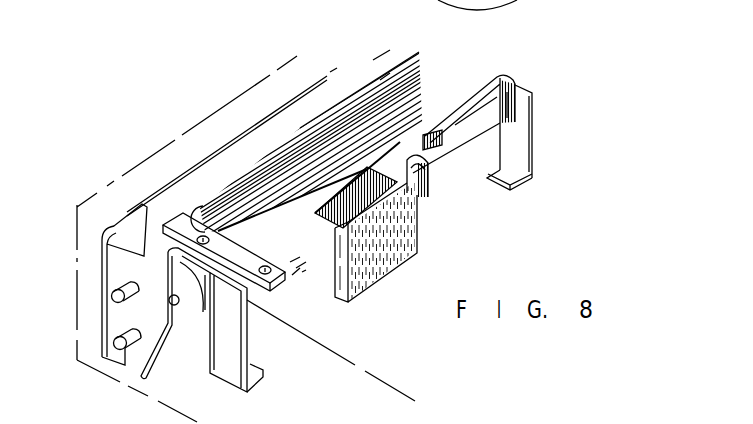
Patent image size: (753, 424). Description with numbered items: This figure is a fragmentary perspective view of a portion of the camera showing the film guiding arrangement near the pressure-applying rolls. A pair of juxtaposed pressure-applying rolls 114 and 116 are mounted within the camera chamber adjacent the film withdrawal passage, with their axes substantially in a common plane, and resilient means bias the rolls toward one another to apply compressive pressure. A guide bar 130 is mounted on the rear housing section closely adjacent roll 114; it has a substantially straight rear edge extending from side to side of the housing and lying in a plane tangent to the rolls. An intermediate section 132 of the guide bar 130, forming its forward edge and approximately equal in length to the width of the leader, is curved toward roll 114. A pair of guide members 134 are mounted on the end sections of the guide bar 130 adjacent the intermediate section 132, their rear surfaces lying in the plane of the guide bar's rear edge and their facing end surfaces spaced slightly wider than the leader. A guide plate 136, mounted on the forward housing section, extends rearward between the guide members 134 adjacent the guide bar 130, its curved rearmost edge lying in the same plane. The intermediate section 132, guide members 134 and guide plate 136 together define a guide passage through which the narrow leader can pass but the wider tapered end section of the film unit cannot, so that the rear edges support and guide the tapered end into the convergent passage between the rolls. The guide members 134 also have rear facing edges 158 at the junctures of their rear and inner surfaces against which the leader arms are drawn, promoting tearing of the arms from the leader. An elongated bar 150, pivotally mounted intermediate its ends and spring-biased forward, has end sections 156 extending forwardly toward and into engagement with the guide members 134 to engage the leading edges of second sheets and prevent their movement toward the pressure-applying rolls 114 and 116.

The pressure-applying roll 114 is at (372, 104).
The pressure-applying roll 116 is at (197, 318).
The guide bar 130 is at (360, 162).
The intermediate section 132 is at (278, 218).
The guide members 134 is at (418, 122).
The guide plate 136 is at (413, 238).
The elongated bar 150 is at (463, 118).
The end sections 156 is at (512, 111).
The rear facing edges 158 is at (425, 176).